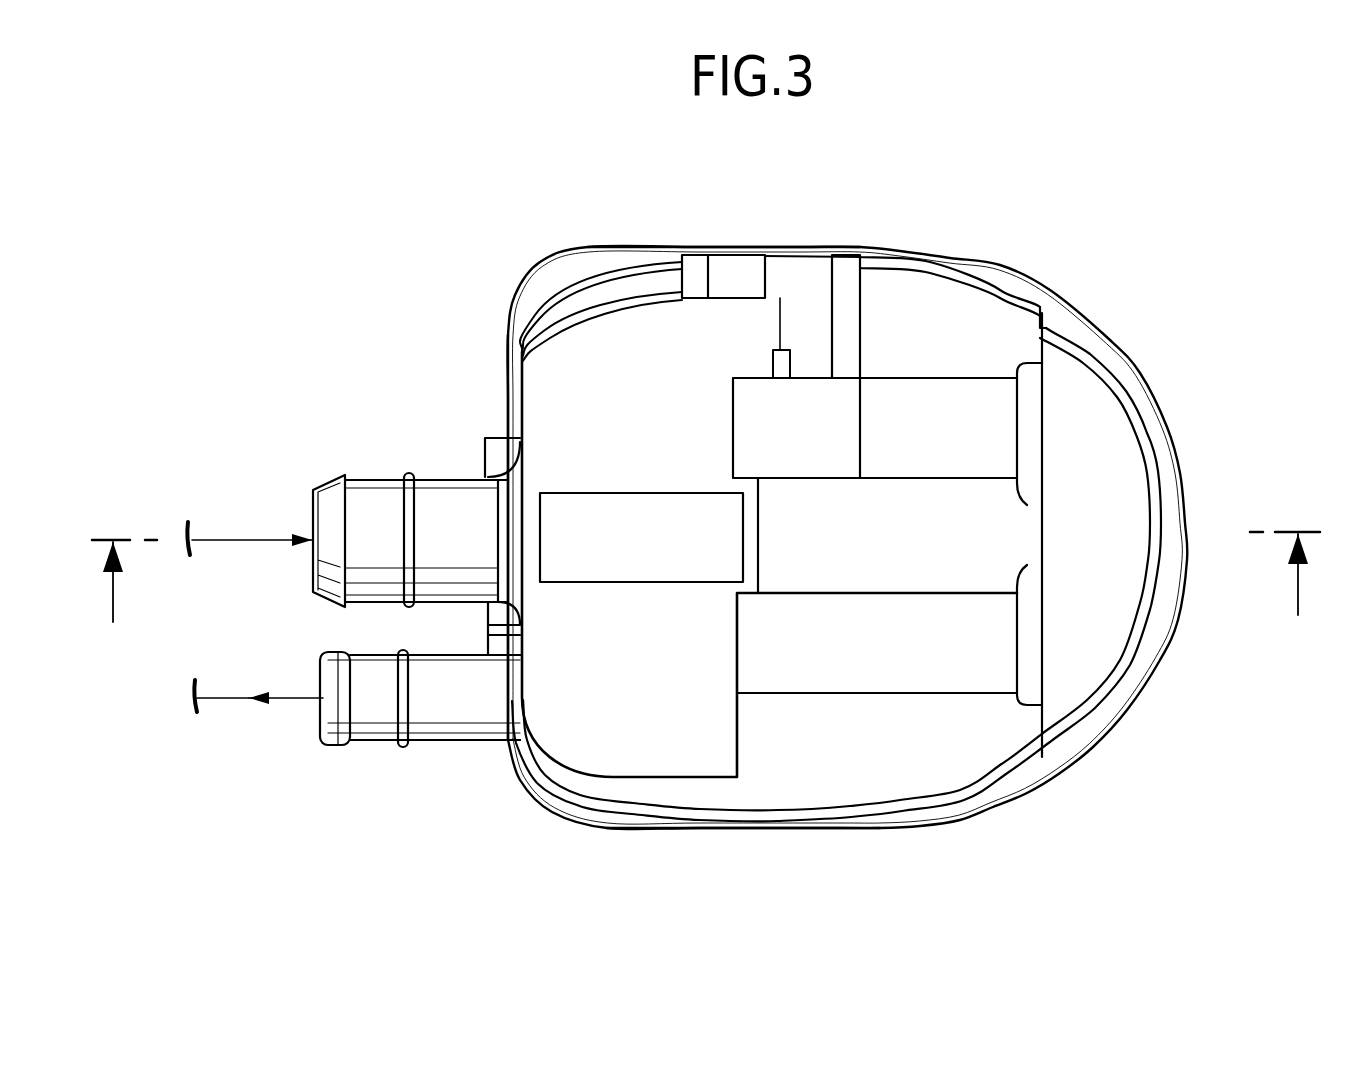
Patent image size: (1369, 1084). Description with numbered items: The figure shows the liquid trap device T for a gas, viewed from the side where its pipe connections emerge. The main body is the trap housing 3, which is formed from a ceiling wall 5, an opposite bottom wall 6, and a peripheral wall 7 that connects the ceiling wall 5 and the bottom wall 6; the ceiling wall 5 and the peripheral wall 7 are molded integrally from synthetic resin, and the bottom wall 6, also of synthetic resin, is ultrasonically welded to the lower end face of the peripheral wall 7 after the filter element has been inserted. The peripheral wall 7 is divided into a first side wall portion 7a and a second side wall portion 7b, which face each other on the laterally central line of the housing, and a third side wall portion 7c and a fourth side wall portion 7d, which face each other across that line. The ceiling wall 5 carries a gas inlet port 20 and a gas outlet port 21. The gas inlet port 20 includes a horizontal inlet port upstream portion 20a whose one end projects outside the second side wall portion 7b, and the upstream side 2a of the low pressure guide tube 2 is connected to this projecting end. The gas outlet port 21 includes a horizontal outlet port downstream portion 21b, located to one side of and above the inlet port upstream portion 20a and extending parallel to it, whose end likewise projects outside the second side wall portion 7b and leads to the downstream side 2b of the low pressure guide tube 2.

The liquid trap device T is at (1078, 290).
The low pressure guide tube 2 is at (229, 519).
The upstream side of the low pressure guide tube 2a is at (250, 545).
The downstream side of the low pressure guide tube 2b is at (270, 700).
The trap housing 3 is at (964, 260).
The ceiling wall 5 is at (611, 328).
The bottom wall 6 is at (705, 577).
The peripheral wall 7 is at (1125, 351).
The first side wall portion 7a is at (1168, 430).
The second side wall portion 7b is at (508, 396).
The third side wall portion 7c is at (783, 830).
The fourth side wall portion 7d is at (746, 247).
The gas inlet port 20 is at (381, 476).
The inlet port upstream portion 20a is at (448, 500).
The gas outlet port 21 is at (372, 746).
The outlet port downstream portion 21b is at (462, 712).